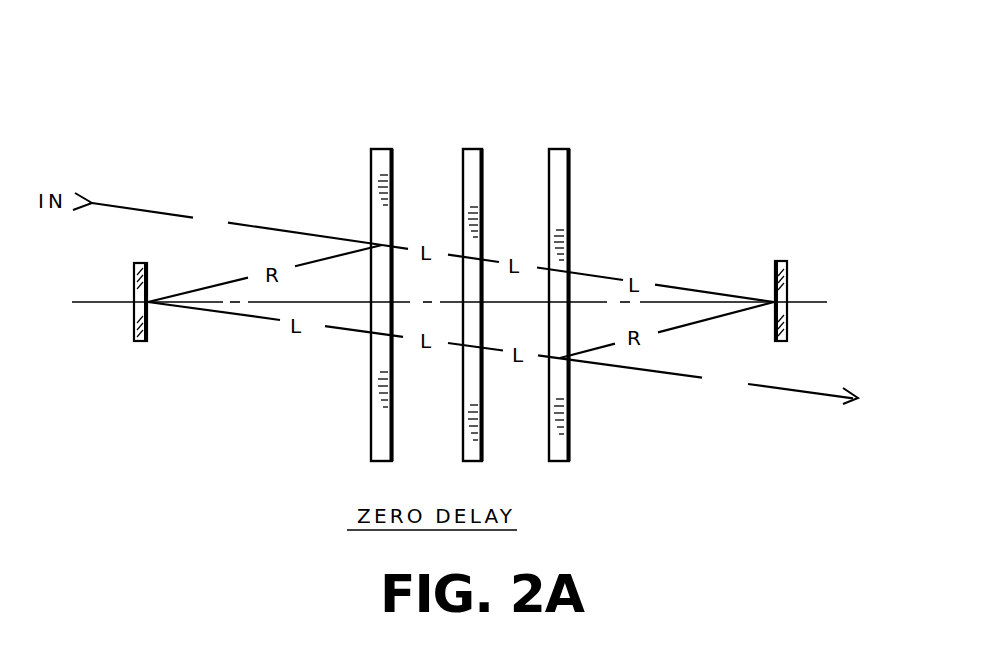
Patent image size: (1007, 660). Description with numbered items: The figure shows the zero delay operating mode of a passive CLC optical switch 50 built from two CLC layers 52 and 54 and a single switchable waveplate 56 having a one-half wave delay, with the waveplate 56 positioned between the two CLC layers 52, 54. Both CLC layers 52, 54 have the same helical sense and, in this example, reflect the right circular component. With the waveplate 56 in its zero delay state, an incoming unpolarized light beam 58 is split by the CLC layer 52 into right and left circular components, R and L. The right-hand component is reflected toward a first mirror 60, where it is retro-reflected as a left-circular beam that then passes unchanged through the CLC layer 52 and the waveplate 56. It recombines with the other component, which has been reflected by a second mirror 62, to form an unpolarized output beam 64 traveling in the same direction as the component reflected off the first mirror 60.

The switch 50 is at (725, 202).
The CLC layer 52 is at (375, 270).
The CLC layer 54 is at (620, 270).
The switchable waveplate 56 is at (532, 233).
The incoming unpolarized light beam 58 is at (237, 207).
The first mirror 60 is at (226, 330).
The second mirror 62 is at (775, 267).
The unpolarized output beam 64 is at (743, 404).